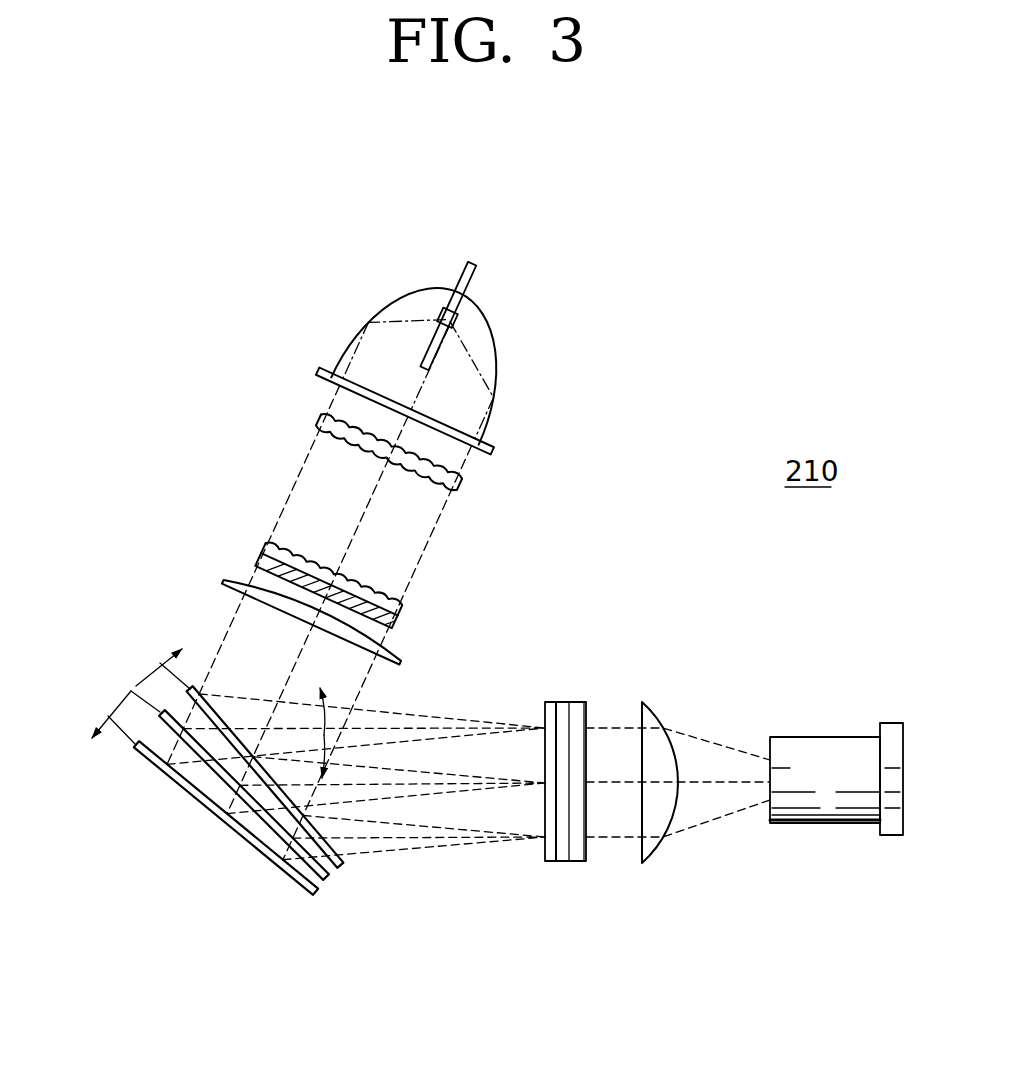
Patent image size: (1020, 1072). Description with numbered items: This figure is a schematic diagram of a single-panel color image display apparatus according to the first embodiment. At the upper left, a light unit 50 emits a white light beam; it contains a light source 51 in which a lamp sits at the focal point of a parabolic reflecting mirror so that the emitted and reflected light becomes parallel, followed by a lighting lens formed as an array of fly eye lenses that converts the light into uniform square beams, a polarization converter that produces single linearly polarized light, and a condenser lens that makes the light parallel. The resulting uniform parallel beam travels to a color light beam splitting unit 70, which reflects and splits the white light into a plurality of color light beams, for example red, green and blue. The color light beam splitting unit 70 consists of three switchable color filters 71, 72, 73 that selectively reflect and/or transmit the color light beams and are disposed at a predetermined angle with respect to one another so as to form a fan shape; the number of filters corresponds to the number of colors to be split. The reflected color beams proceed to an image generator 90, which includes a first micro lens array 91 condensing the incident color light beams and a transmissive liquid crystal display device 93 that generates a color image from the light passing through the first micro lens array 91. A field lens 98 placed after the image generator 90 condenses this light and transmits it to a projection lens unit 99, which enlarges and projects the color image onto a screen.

The light unit 50 is at (222, 265).
The light source 51 is at (343, 546).
The color light beam splitting unit 70 is at (113, 662).
The switchable color filter 71 is at (337, 863).
The switchable color filter 72 is at (325, 877).
The switchable color filter 73 is at (302, 883).
The image generator 90 is at (580, 915).
The first micro lens array 91 is at (547, 867).
The liquid crystal display device 93 is at (587, 862).
The field lens 98 is at (657, 848).
The projection lens unit 99 is at (823, 818).